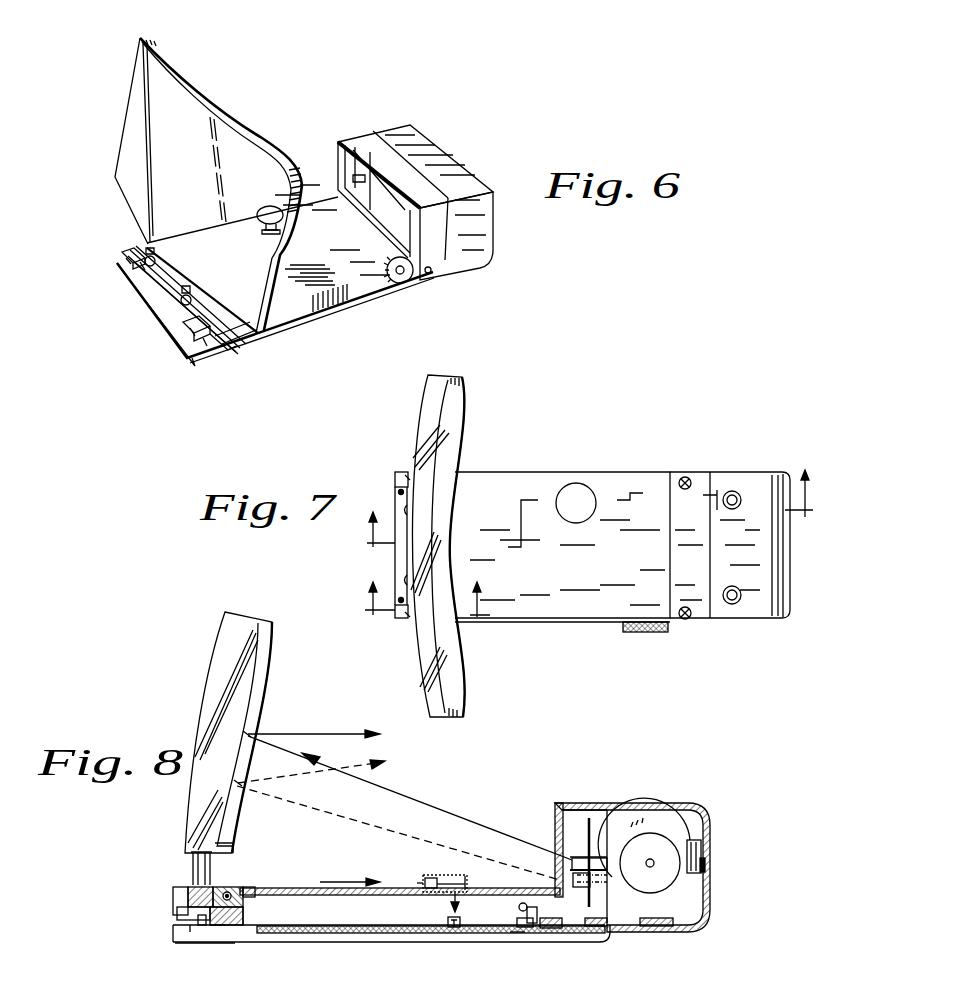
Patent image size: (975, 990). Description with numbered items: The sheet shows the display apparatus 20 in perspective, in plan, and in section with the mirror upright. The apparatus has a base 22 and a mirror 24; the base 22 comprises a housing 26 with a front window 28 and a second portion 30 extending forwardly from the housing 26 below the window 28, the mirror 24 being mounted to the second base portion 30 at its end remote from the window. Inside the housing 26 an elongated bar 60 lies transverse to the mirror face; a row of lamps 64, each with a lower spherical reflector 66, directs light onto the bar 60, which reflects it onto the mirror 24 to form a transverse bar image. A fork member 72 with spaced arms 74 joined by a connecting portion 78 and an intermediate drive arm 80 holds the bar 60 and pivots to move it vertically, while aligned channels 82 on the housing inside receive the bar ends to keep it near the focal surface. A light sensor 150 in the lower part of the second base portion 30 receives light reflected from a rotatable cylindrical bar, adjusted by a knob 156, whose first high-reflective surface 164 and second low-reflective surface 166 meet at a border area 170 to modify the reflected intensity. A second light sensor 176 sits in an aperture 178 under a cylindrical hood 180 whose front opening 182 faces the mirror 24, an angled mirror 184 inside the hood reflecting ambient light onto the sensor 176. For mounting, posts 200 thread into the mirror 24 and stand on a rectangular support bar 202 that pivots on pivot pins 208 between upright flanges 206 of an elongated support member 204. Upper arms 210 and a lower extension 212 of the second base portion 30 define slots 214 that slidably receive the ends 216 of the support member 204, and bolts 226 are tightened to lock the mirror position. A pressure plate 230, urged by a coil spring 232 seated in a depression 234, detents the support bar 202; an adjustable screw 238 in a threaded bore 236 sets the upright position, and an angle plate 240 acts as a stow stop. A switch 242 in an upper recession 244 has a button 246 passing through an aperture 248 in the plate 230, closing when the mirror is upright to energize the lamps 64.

In FIG. 6, the display apparatus 20 is at (360, 287).
In FIG. 7, the display apparatus 20 is at (523, 615).
In FIG. 6, the base 22 is at (353, 302).
In FIG. 6, the mirror 24 is at (176, 68).
In FIG. 7, the mirror 24 is at (457, 380).
In FIG. 8, the mirror 24 is at (268, 623).
In FIG. 6, the housing 26 is at (399, 132).
In FIG. 7, the housing 26 is at (752, 487).
In FIG. 8, the housing 26 is at (640, 803).
In FIG. 6, the front window 28 is at (343, 158).
In FIG. 8, the front window 28 is at (556, 814).
In FIG. 6, the second portion 30 is at (303, 307).
In FIG. 7, the second portion 30 is at (580, 622).
In FIG. 8, the second portion 30 is at (305, 942).
In FIG. 6, the elongated bar 60 is at (383, 214).
In FIG. 8, the elongated bar 60 is at (573, 863).
In FIG. 8, the lamps 64 is at (590, 928).
In FIG. 8, the spherical reflector 66 is at (561, 930).
In FIG. 8, the fork member 72 is at (707, 817).
In FIG. 8, the arms 74 is at (683, 805).
In FIG. 8, the connecting portion 78 is at (705, 862).
In FIG. 8, the drive arm 80 is at (607, 857).
In FIG. 8, the channels 82 is at (589, 818).
In FIG. 8, the light sensor 150 is at (516, 934).
In FIG. 6, the knob 156 is at (415, 278).
In FIG. 7, the knob 156 is at (632, 633).
In FIG. 8, the first high-reflective surface 164 is at (517, 924).
In FIG. 8, the second low-reflective surface 166 is at (522, 903).
In FIG. 8, the border area 170 is at (533, 926).
In FIG. 8, the light sensor 176 is at (455, 930).
In FIG. 8, the aperture 178 is at (459, 906).
In FIG. 6, the hood 180 is at (257, 220).
In FIG. 7, the hood 180 is at (578, 483).
In FIG. 8, the hood 180 is at (442, 875).
In FIG. 6, the front opening 182 is at (268, 236).
In FIG. 8, the front opening 182 is at (417, 883).
In FIG. 8, the mirror 184 is at (468, 882).
In FIG. 6, the posts 200 is at (137, 272).
In FIG. 8, the posts 200 is at (197, 862).
In FIG. 6, the support bar 202 is at (146, 284).
In FIG. 7, the support bar 202 is at (395, 558).
In FIG. 8, the support bar 202 is at (222, 891).
In FIG. 6, the support member 204 is at (177, 293).
In FIG. 8, the support member 204 is at (176, 928).
In FIG. 6, the upright flanges 206 is at (128, 262).
In FIG. 7, the upright flanges 206 is at (395, 487).
In FIG. 8, the pivot pins 208 is at (228, 889).
In FIG. 6, the upper arm 210 is at (146, 256).
In FIG. 7, the upper arm 210 is at (395, 614).
In FIG. 6, the lower extension 212 is at (136, 259).
In FIG. 8, the lower extension 212 is at (173, 940).
In FIG. 6, the slots 214 is at (250, 347).
In FIG. 6, the ends 216 is at (126, 258).
In FIG. 7, the ends 216 is at (395, 476).
In FIG. 6, the bolts 226 is at (230, 357).
In FIG. 7, the bolts 226 is at (408, 470).
In FIG. 8, the pressure plate 230 is at (258, 888).
In FIG. 8, the coil spring 232 is at (247, 904).
In FIG. 8, the depression 234 is at (246, 920).
In FIG. 8, the threaded bore 236 is at (176, 890).
In FIG. 8, the adjustable screw 238 is at (178, 906).
In FIG. 8, the angle plate 240 is at (246, 888).
In FIG. 8, the switch 242 is at (214, 935).
In FIG. 8, the upper recession 244 is at (202, 928).
In FIG. 8, the button 246 is at (212, 890).
In FIG. 8, the aperture 248 is at (192, 930).